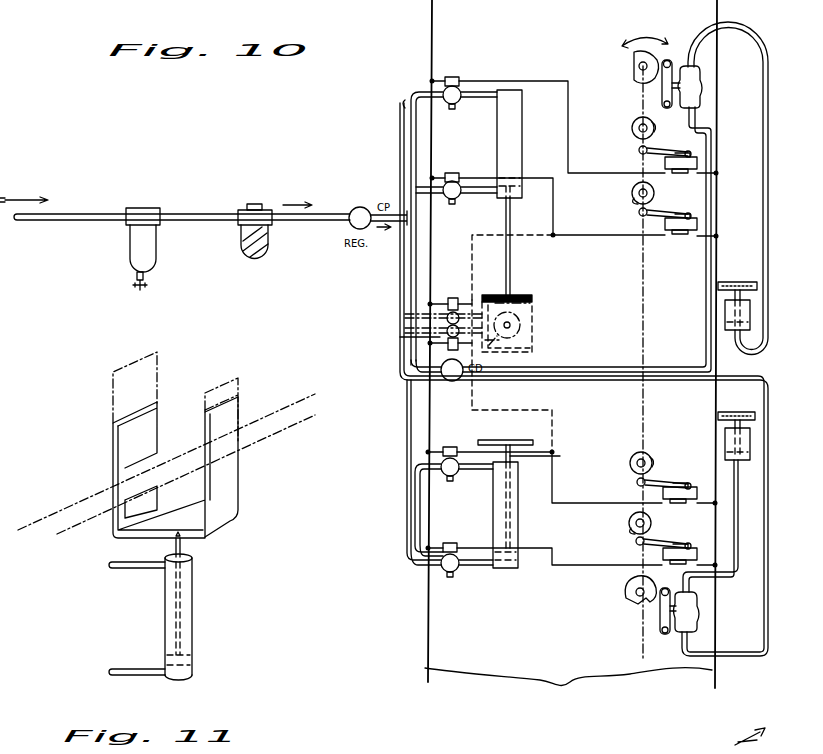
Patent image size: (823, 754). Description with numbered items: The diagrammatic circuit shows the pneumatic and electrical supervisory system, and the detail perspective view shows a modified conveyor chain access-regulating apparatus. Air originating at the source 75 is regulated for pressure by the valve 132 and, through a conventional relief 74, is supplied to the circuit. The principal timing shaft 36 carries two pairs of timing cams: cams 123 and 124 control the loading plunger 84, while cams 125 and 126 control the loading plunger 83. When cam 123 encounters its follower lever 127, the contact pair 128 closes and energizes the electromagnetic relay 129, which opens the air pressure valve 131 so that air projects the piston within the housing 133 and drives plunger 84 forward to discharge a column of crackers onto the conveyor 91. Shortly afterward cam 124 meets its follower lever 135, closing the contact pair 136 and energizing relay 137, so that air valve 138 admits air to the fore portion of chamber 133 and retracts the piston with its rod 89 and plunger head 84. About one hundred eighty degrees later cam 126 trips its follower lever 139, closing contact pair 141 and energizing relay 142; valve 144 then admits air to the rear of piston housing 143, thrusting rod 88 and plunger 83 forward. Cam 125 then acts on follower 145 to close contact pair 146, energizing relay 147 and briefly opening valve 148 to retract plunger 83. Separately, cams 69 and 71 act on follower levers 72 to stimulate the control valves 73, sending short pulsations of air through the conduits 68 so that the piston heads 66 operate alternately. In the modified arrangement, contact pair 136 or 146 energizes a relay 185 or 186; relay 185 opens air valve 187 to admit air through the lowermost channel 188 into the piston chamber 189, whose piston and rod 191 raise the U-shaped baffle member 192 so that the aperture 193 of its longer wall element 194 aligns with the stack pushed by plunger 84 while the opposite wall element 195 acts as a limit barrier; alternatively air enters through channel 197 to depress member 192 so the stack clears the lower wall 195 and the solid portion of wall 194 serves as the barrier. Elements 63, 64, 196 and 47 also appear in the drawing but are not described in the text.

In FIG. 10, the source 75 is at (22, 223).
In FIG. 10, the pressure regulating valve 132 is at (361, 207).
In FIG. 10, the electromagnetic relay 129 is at (456, 77).
In FIG. 10, the air pressure valve 131 is at (462, 92).
In FIG. 10, the piston housing 133 is at (522, 133).
In FIG. 10, the electromagnetic relay 137 is at (455, 173).
In FIG. 10, the air valve 138 is at (459, 195).
In FIG. 10, the rod 89 is at (511, 250).
In FIG. 10, the cam 71 is at (632, 72).
In FIG. 10, the follower lever 72 is at (662, 83).
In FIG. 10, the control valve 73 is at (701, 80).
In FIG. 10, the conduit 68 is at (766, 143).
In FIG. 10, the timing cam 123 is at (634, 126).
In FIG. 10, the follower lever 127 is at (662, 150).
In FIG. 10, the contact pair 128 is at (665, 163).
In FIG. 10, the timing cam 124 is at (633, 193).
In FIG. 10, the follower lever 135 is at (663, 212).
In FIG. 10, the contact pair 136 is at (665, 225).
In FIG. 10, the principal timing shaft 36 is at (645, 300).
In FIG. 10, the piston head 66 is at (738, 282).
In FIG. 10, the cylinder 64 is at (725, 319).
In FIG. 10, the cylinder 63 is at (725, 444).
In FIG. 10, the timing cam 125 is at (640, 455).
In FIG. 10, the follower 145 is at (662, 468).
In FIG. 10, the contact pair 146 is at (663, 494).
In FIG. 10, the cam 126 is at (630, 523).
In FIG. 10, the follower lever 139 is at (669, 535).
In FIG. 10, the contact pair 141 is at (663, 559).
In FIG. 10, the cam 69 is at (624, 595).
In FIG. 10, the relay 147 is at (457, 441).
In FIG. 10, the valve 148 is at (446, 478).
In FIG. 10, the electromagnetic relay 142 is at (460, 539).
In FIG. 10, the valve 144 is at (449, 576).
In FIG. 10, the piston housing 143 is at (519, 525).
In FIG. 10, the loading plunger 83 is at (498, 455).
In FIG. 10, the rod 88 is at (545, 453).
In FIG. 10, the relay 185 is at (448, 298).
In FIG. 10, the relay 186 is at (446, 345).
In FIG. 10, the air valve 187 is at (447, 320).
In FIG. 10, the valve 196 is at (447, 333).
In FIG. 10, the lowermost channel 188 is at (473, 300).
In FIG. 11, the lowermost channel 188 is at (130, 656).
In FIG. 10, the loading plunger 84 is at (512, 296).
In FIG. 10, the U-shaped baffle member 192 is at (535, 310).
In FIG. 11, the U-shaped baffle member 192 is at (150, 540).
In FIG. 10, the piston chamber 189 is at (535, 345).
In FIG. 11, the piston chamber 189 is at (192, 606).
In FIG. 10, the channel 197 is at (492, 347).
In FIG. 11, the channel 197 is at (126, 570).
In FIG. 10, the relief 74 is at (463, 378).
In FIG. 10, the frame member 47 is at (720, 752).
In FIG. 11, the conveyor 91 is at (62, 508).
In FIG. 11, the longer wall element 194 is at (117, 441).
In FIG. 11, the opposite wall element 195 is at (231, 464).
In FIG. 11, the aperture 193 is at (148, 504).
In FIG. 11, the rod 191 is at (186, 549).